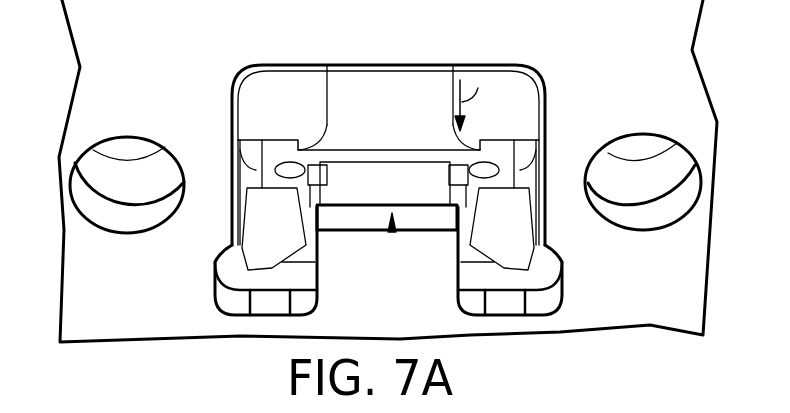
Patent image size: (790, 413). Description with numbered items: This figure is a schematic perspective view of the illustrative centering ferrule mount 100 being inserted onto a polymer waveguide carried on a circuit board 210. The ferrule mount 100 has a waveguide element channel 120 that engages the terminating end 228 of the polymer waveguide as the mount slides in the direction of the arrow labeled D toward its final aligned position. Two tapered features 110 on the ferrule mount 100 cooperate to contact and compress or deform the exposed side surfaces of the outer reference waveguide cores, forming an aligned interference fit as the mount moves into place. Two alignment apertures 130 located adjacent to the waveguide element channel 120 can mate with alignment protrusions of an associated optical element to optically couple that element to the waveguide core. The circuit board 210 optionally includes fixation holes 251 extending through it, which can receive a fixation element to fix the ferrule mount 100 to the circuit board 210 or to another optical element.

The ferrule mount element 100 is at (369, 91).
The tapered features 110 is at (310, 180).
The waveguide element channel 120 is at (366, 192).
The alignment apertures 130 is at (285, 170).
The circuit board 210 is at (168, 314).
The terminating end 228 is at (391, 232).
The fixation holes 251 is at (656, 187).